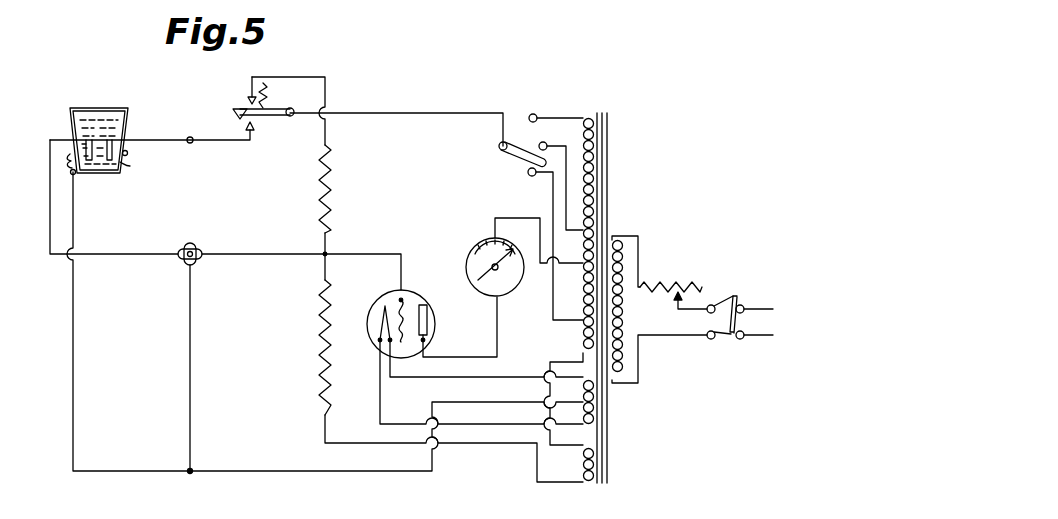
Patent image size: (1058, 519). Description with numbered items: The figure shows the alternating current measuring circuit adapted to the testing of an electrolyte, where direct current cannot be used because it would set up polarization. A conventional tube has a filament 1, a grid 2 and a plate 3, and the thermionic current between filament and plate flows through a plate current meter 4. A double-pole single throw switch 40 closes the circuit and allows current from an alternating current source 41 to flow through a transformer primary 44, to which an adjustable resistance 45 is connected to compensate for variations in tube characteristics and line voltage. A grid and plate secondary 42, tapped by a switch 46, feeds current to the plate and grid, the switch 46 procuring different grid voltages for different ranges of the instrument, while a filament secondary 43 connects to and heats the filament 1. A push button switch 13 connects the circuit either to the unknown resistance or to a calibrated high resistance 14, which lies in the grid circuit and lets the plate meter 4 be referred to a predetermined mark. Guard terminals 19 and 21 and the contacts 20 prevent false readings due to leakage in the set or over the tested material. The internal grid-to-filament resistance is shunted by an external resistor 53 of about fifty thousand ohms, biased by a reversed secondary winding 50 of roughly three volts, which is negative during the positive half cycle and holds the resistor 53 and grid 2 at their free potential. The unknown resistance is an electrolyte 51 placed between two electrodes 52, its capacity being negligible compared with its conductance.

The filament 1 is at (380, 336).
The grid 2 is at (405, 308).
The plate 3 is at (428, 322).
The plate current meter 4 is at (479, 245).
The push button switch 13 is at (275, 106).
The calibrated high resistance 14 is at (330, 192).
The guard terminal 19 is at (125, 165).
The contacts 20 is at (196, 248).
The guard terminal 21 is at (197, 262).
The double-pole single throw switch 40 is at (738, 303).
The alternating current source 41 is at (748, 331).
The grid and plate secondary 42 is at (594, 192).
The filament secondary 43 is at (594, 414).
The transformer primary 44 is at (622, 272).
The adjustable resistance 45 is at (674, 291).
The switch 46 is at (520, 140).
The reversed secondary winding 50 is at (594, 470).
The electrolyte 51 is at (103, 130).
The electrodes 52 is at (75, 150).
The external resistor 53 is at (318, 348).